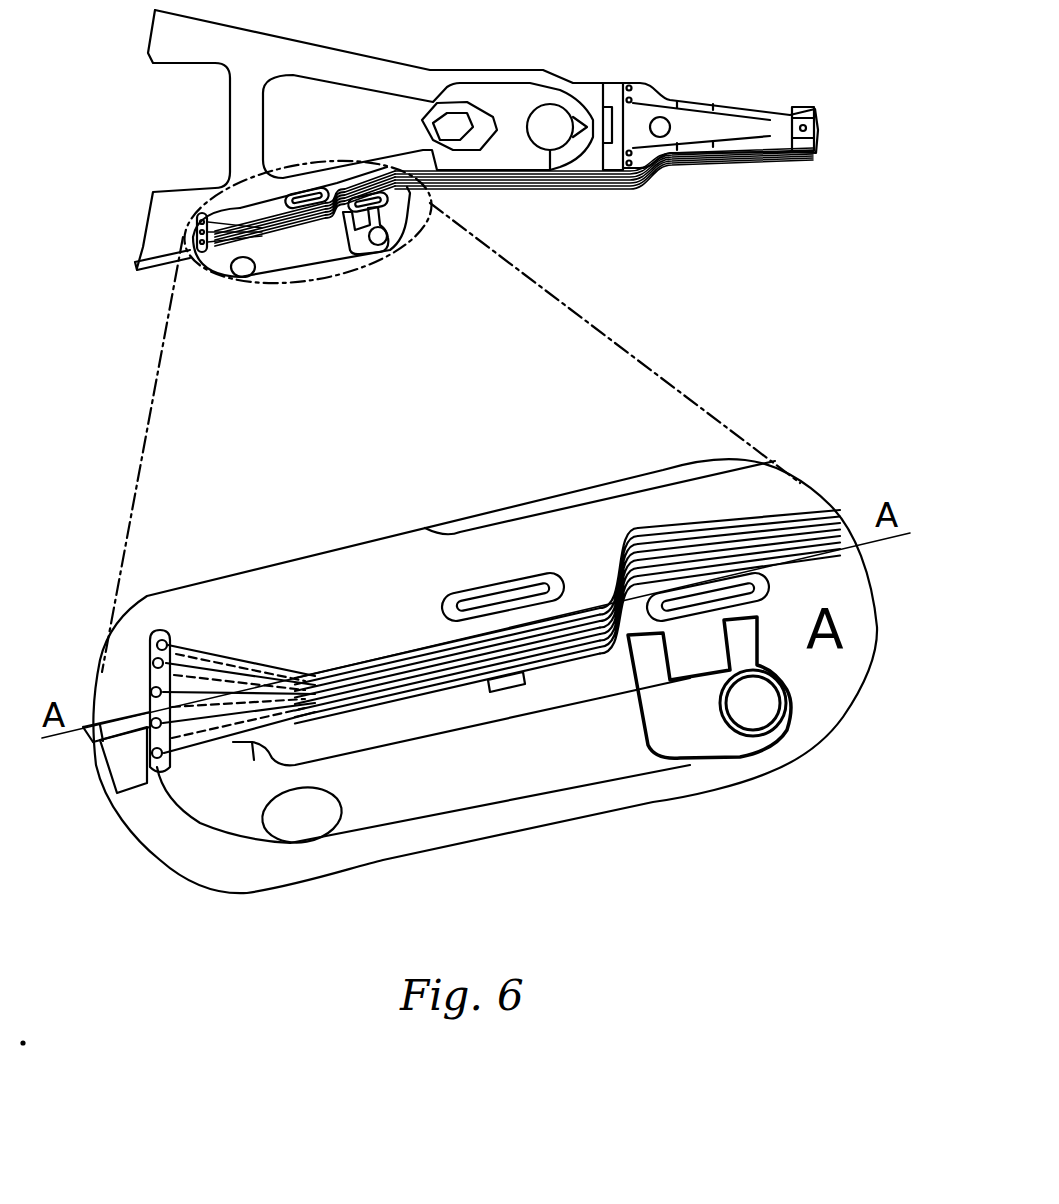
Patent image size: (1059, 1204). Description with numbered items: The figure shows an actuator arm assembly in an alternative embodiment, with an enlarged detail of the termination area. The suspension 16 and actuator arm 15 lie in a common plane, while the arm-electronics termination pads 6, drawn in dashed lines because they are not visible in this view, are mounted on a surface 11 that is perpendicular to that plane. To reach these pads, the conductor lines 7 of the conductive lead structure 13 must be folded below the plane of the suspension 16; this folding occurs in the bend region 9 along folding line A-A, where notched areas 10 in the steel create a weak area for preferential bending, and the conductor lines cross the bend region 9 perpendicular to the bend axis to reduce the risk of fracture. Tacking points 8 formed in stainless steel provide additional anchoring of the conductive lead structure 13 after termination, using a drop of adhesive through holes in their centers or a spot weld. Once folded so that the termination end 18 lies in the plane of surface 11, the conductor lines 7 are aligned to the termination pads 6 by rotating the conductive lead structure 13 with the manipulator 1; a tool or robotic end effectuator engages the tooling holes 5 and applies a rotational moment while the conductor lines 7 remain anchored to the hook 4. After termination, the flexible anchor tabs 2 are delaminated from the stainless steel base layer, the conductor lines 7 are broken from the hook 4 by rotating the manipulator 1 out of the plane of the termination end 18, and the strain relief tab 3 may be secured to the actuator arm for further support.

The manipulator 1 is at (460, 787).
The flexible anchor tabs 2 is at (747, 641).
The strain relief tab 3 is at (513, 690).
The hook 4 is at (157, 632).
The tooling holes 5 is at (760, 708).
The termination pads 6 is at (221, 666).
The conductor lines 7 is at (240, 747).
The tacking points 8 is at (503, 592).
The bend region 9 is at (620, 640).
The notched areas 10 is at (568, 606).
The surface 11 is at (132, 788).
The conductive lead structure 13 is at (544, 640).
The actuator arm 15 is at (245, 155).
The suspension 16 is at (700, 93).
The termination end 18 is at (135, 751).